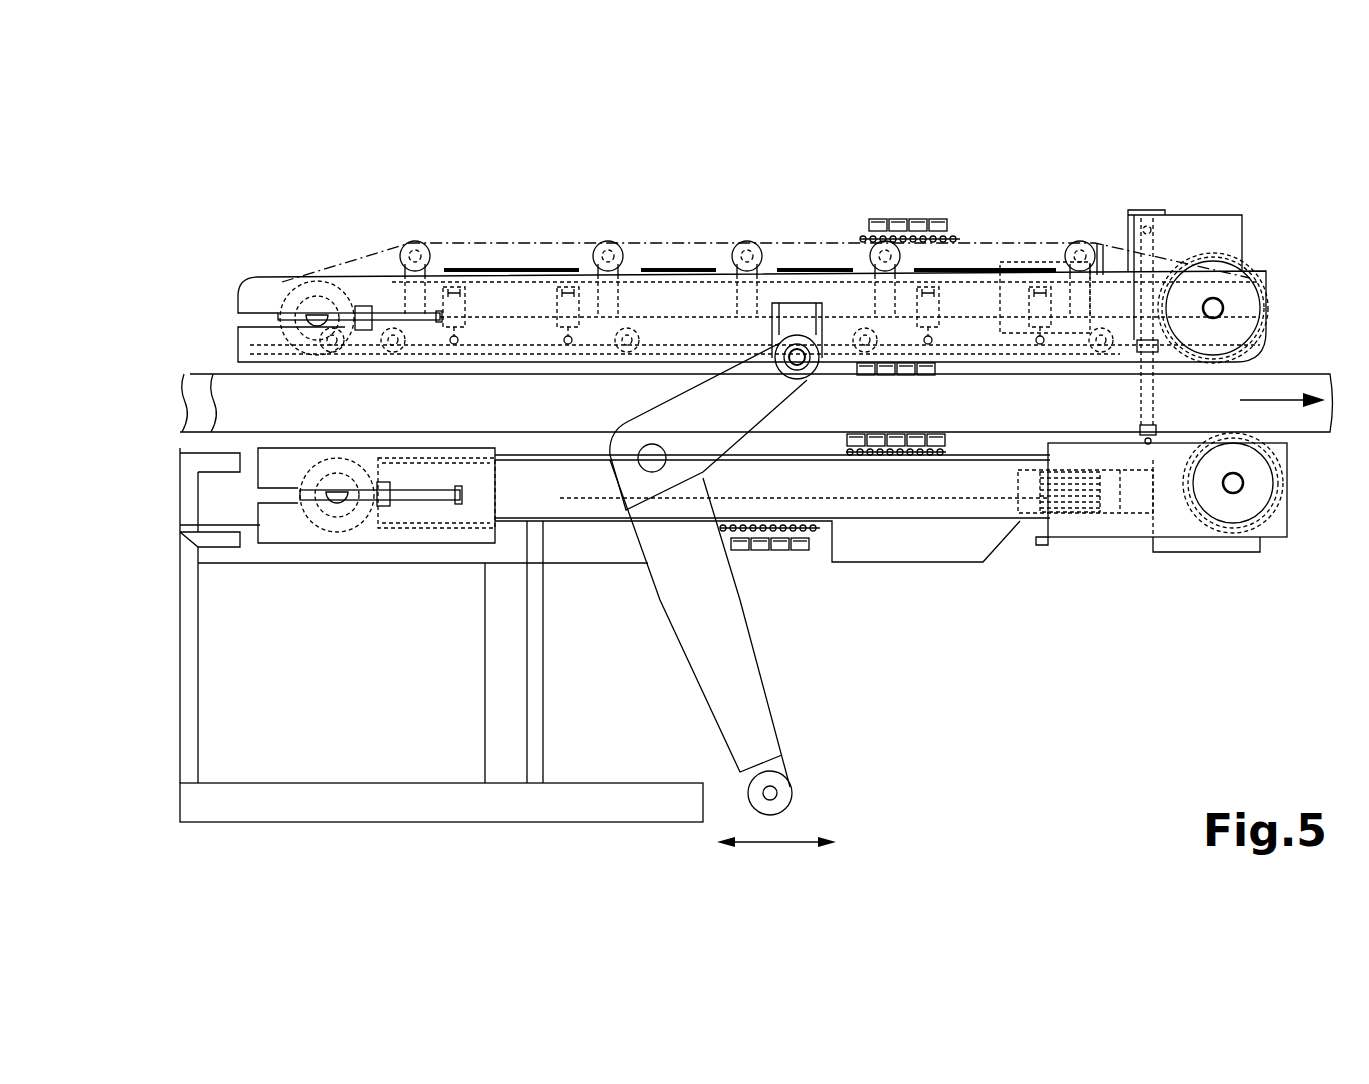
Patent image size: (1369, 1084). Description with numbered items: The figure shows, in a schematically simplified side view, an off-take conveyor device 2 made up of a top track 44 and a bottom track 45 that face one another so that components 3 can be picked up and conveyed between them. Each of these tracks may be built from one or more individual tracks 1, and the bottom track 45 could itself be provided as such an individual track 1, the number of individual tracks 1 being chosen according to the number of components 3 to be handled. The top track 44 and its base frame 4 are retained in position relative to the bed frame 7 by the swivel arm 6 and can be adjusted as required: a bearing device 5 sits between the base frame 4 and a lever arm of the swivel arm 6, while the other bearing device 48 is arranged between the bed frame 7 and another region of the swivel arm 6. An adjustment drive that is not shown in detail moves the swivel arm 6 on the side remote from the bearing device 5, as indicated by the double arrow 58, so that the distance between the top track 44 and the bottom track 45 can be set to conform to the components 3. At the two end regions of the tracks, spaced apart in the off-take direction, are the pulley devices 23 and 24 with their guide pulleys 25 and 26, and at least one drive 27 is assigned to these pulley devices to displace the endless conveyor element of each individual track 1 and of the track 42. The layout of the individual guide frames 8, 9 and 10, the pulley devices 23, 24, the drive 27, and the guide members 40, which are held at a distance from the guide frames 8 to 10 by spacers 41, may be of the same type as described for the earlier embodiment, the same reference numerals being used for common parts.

The individual track 1 is at (222, 308).
The off-take conveyor device 2 is at (214, 246).
The component 3 is at (232, 402).
The base frame 4 is at (830, 292).
The bearing device 5 is at (790, 322).
The swivel arm 6 is at (732, 675).
The bed frame 7 is at (413, 803).
The guide frame 8 is at (510, 333).
The guide frame 9 is at (686, 330).
The guide frame 10 is at (958, 330).
The pulley device 23 is at (316, 250).
The pulley device 24 is at (1256, 246).
The guide pulley 25 is at (300, 290).
The guide pulley 26 is at (1243, 373).
The drive 27 is at (1003, 293).
The guide member 40 is at (420, 232).
The spacer 41 is at (407, 288).
The track 42 is at (1098, 560).
The top track 44 is at (657, 234).
The bottom track 45 is at (1022, 558).
The bearing device 48 is at (644, 489).
The double arrow 58 is at (776, 850).